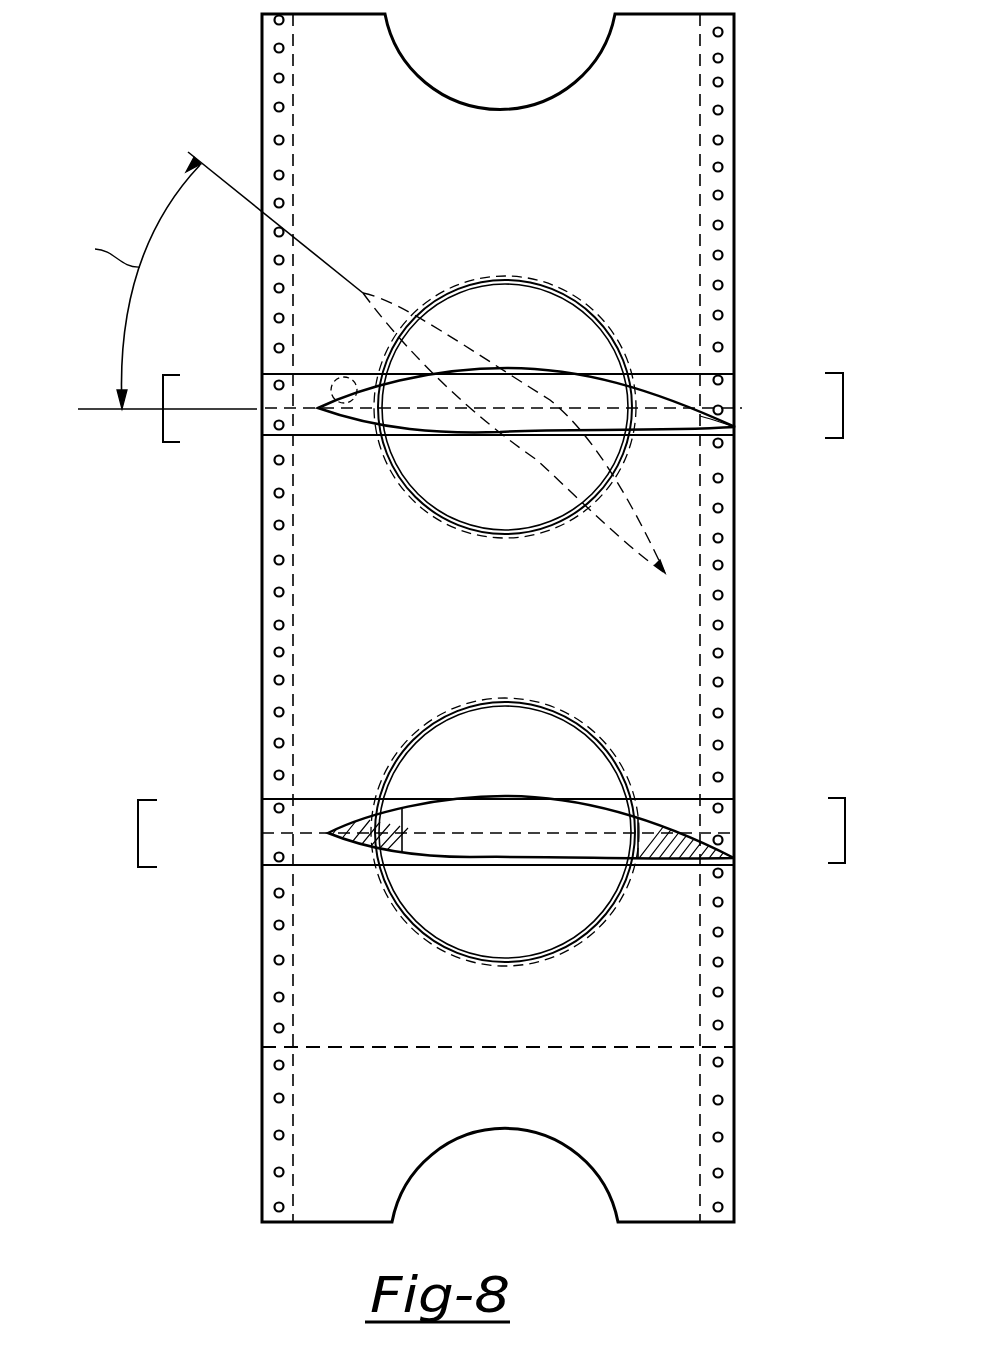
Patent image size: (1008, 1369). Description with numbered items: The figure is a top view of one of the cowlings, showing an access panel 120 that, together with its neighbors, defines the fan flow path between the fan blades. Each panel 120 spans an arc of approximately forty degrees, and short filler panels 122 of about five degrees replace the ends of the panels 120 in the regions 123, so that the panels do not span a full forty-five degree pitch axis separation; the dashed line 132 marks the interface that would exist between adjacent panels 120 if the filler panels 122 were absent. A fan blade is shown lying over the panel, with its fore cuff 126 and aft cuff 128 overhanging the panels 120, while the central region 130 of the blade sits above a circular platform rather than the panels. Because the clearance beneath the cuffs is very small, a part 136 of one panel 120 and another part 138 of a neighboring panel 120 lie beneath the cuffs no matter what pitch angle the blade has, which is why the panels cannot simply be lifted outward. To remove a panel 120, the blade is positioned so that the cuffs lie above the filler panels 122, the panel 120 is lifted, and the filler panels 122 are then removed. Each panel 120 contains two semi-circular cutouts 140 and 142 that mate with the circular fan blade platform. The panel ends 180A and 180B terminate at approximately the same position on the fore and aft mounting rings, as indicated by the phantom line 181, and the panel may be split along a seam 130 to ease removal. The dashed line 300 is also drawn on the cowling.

The cowl panel 120 is at (372, 547).
The filler panel 122 is at (312, 376).
The region 123 is at (162, 413).
The fore cuff 126 is at (363, 820).
The aft cuff 128 is at (685, 828).
The central region of the blade 130 is at (533, 826).
The dashed line 132 is at (300, 448).
The part of panel 136 is at (360, 377).
The part of neighboring panel 138 is at (737, 420).
The semi-circular cutout 140 is at (521, 699).
The semi-circular cutout 142 is at (537, 534).
The panel end 180A is at (308, 797).
The panel end 180B is at (725, 797).
The phantom line 181 is at (510, 797).
The reference line 300 is at (668, 1047).